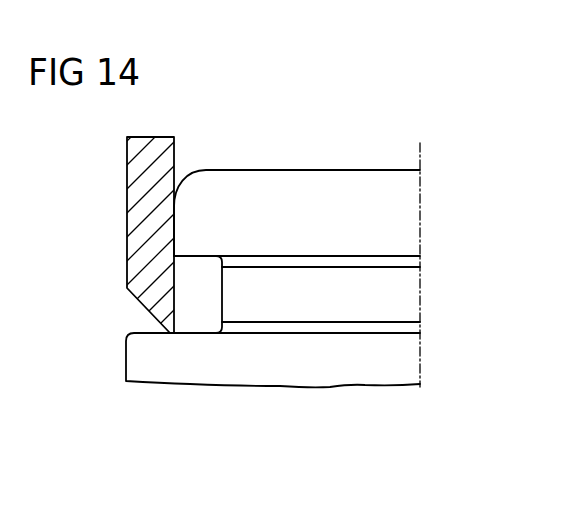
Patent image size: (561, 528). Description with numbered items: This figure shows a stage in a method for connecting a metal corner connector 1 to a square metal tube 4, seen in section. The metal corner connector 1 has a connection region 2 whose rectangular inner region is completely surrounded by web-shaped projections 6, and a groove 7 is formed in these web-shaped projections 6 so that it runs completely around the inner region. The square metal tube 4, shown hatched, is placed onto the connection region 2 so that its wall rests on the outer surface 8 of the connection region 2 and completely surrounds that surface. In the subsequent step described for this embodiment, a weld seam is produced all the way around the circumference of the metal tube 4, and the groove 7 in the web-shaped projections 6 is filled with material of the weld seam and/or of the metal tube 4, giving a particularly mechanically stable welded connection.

The metal corner connector 1 is at (418, 232).
The connection region 2 is at (420, 144).
The square metal tube 4 is at (138, 211).
The web-shaped projections 6 is at (311, 233).
The groove 7 is at (200, 315).
The outer surface 8 is at (148, 332).